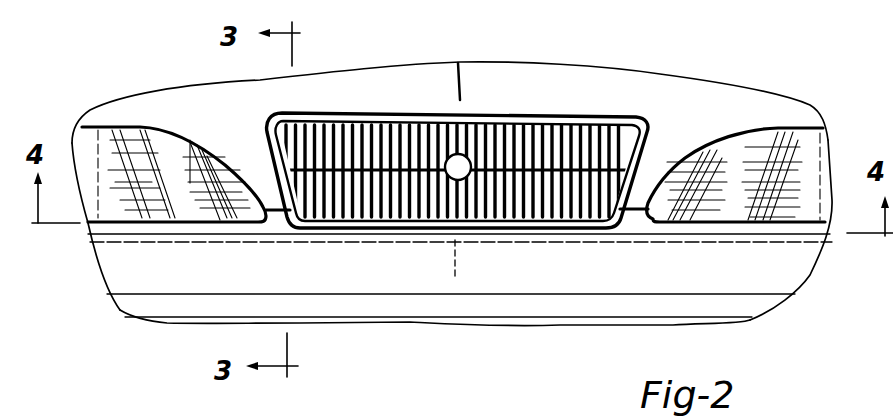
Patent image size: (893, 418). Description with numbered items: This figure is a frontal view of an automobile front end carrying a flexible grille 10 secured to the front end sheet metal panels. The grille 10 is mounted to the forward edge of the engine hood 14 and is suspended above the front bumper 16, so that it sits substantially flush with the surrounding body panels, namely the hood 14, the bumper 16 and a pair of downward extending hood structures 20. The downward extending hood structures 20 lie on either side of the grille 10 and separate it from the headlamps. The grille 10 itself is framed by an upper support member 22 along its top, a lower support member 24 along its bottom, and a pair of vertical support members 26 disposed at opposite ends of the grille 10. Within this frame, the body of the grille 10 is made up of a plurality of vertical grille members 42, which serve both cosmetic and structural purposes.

The flexible grille 10 is at (604, 208).
The engine hood 14 is at (492, 80).
The front bumper 16 is at (365, 283).
The downward extending hood structures 20 is at (658, 160).
The upper support member 22 is at (567, 118).
The lower support member 24 is at (501, 222).
The vertical support members 26 is at (265, 133).
The vertical grille members 42 is at (392, 152).